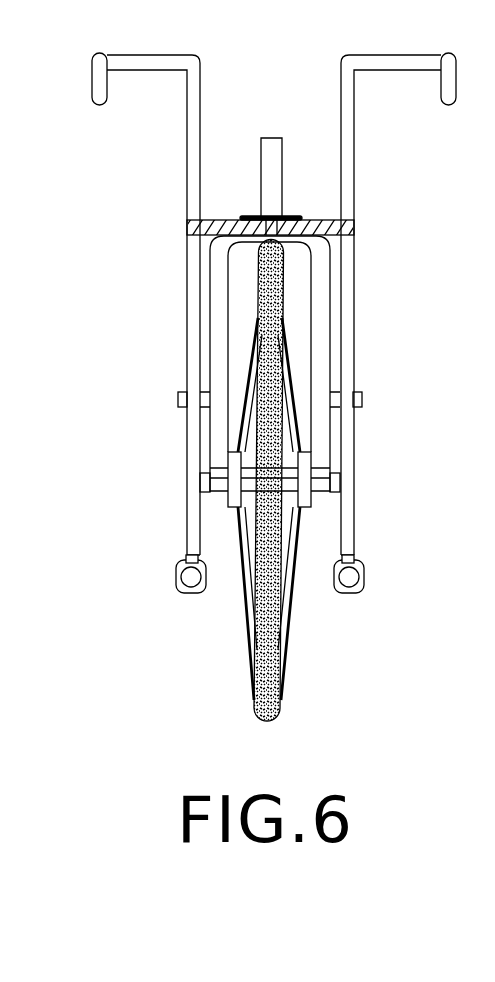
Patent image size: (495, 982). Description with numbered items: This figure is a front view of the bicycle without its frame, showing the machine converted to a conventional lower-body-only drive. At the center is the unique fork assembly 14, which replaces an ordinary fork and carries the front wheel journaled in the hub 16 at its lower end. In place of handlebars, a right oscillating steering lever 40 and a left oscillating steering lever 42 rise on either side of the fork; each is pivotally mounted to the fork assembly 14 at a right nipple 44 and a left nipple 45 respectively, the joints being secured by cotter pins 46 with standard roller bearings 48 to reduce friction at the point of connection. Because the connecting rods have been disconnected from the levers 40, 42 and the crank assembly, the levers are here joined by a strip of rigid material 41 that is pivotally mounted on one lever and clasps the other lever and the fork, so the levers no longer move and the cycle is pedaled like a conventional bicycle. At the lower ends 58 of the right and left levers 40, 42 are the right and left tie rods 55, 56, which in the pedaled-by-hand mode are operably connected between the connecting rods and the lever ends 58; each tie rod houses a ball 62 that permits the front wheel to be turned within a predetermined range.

The fork assembly 14 is at (292, 220).
The hub 16 is at (243, 607).
The right oscillating steering lever 40 is at (188, 203).
The strip of rigid material 41 is at (220, 220).
The left oscillating steering lever 42 is at (357, 205).
The right nipple 44 is at (205, 392).
The left nipple 45 is at (335, 392).
The cotter pins 46 is at (178, 399).
The roller bearings 48 is at (185, 408).
The right tie rod 55 is at (175, 577).
The left tie rod 56 is at (365, 577).
The ends of levers 58 is at (183, 560).
The ball 62 is at (177, 590).